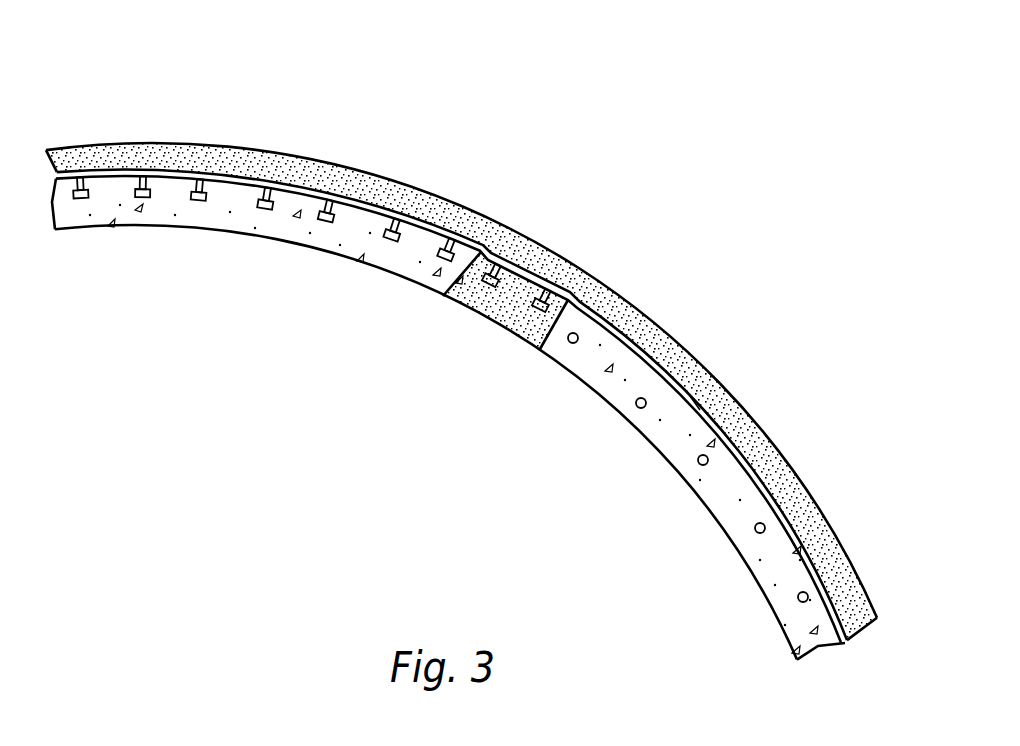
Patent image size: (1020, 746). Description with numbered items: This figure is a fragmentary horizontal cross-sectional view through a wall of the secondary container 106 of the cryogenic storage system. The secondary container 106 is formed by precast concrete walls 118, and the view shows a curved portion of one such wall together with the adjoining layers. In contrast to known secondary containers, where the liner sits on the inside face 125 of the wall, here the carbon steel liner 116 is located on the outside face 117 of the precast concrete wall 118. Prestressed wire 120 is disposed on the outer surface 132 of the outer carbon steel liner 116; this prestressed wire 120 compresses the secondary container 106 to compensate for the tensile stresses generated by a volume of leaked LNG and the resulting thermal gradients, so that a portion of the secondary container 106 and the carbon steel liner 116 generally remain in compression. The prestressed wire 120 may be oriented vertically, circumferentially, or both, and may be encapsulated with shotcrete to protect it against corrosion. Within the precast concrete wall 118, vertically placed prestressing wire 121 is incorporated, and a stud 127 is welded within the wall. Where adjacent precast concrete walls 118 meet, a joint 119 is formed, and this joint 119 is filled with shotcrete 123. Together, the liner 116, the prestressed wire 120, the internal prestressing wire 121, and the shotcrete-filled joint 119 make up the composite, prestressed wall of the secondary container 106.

The secondary container 106 is at (158, 233).
The carbon steel liner 116 is at (848, 642).
The outside face 117 is at (698, 408).
The precast concrete wall 118 is at (393, 256).
The joint 119 is at (510, 310).
The prestressed wire 120 is at (240, 160).
The vertically placed prestressing wire 121 is at (765, 527).
The shotcrete 123 is at (650, 333).
The inside face 125 is at (570, 357).
The stud 127 is at (86, 179).
The outer surface 132 is at (340, 183).